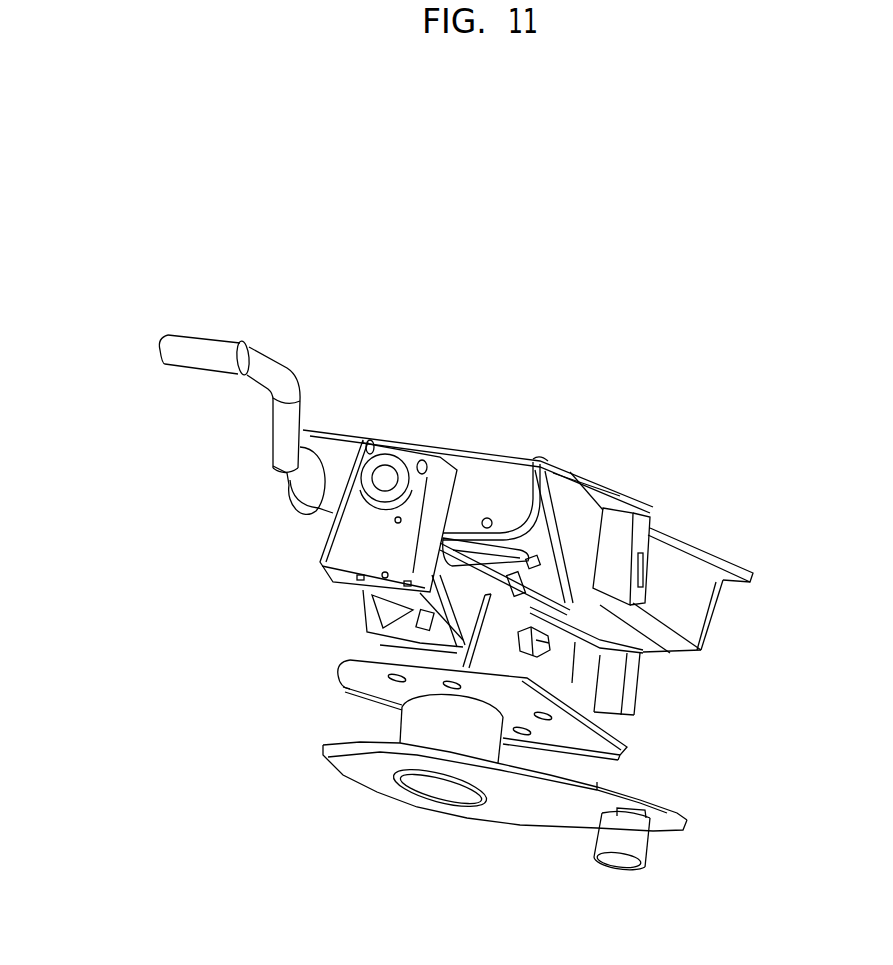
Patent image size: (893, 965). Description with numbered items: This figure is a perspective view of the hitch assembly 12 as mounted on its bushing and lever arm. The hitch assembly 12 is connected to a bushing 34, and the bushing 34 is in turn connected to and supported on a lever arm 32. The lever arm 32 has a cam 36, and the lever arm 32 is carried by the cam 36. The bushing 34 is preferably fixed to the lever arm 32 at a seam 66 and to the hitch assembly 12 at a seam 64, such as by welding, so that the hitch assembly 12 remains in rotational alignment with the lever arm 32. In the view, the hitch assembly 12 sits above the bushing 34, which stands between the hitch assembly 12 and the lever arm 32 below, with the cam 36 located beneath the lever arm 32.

The hitch assembly 12 is at (178, 538).
The lever arm 32 is at (523, 798).
The bushing 34 is at (480, 733).
The cam 36 is at (635, 838).
The seam 64 is at (375, 703).
The seam 66 is at (358, 789).